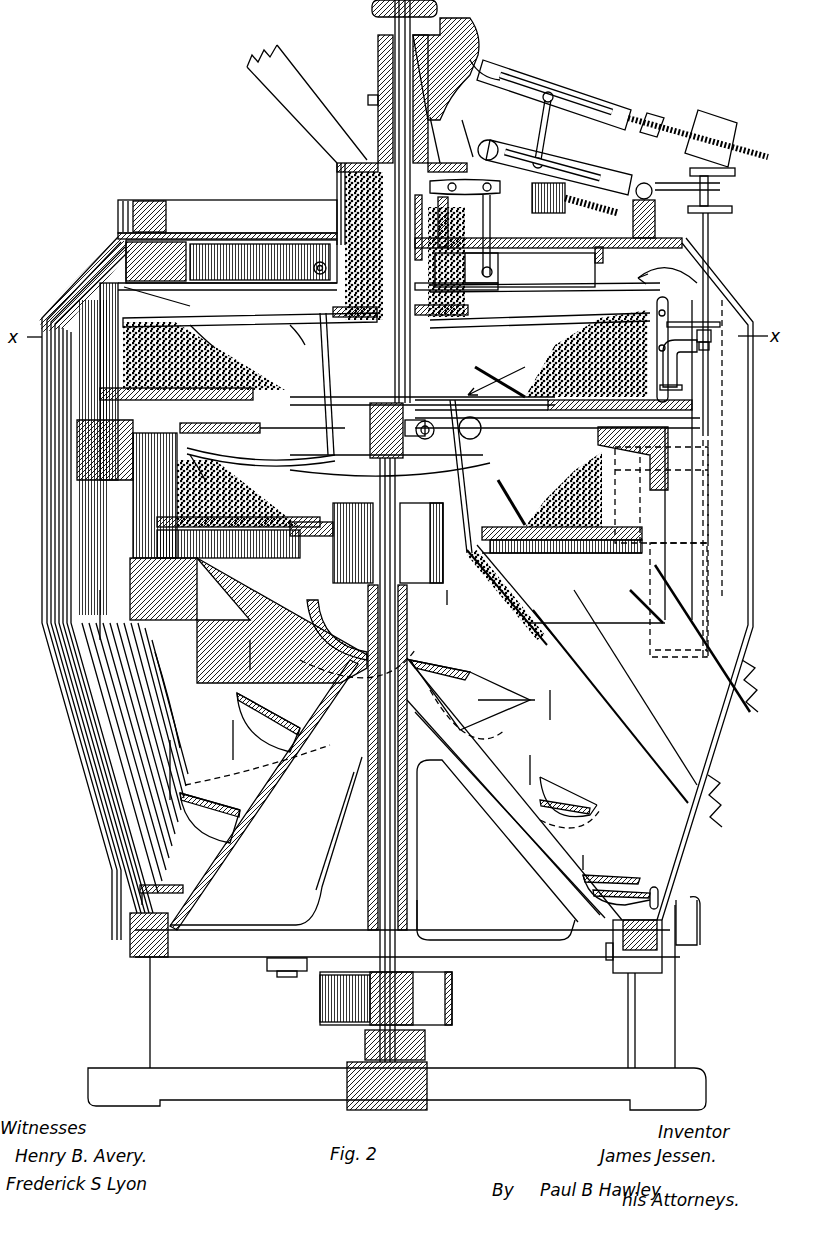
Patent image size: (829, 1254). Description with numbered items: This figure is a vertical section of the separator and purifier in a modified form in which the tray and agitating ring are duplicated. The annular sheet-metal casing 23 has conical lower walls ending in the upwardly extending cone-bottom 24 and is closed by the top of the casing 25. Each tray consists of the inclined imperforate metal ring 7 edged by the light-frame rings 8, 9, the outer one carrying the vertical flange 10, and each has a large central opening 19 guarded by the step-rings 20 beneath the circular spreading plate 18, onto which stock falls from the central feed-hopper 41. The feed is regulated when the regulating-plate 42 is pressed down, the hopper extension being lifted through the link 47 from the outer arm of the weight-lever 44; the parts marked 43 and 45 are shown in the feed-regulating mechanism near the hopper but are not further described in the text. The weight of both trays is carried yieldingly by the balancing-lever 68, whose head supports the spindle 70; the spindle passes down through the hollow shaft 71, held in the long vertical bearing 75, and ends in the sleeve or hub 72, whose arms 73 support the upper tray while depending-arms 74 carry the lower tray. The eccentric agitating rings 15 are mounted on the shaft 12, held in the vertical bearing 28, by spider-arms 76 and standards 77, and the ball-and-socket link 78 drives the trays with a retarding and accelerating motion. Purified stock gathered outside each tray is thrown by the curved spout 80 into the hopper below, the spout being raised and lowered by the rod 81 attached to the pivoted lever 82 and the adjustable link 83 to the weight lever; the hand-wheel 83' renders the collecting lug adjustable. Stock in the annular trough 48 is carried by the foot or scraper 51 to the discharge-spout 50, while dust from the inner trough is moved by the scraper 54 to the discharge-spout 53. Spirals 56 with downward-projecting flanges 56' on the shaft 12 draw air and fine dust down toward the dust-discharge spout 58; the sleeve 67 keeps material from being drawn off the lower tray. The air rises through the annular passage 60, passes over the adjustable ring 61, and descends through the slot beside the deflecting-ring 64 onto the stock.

The inclined imperforate metal ring 7 is at (555, 556).
The light-frame ring 8 is at (388, 502).
The light-frame ring 9 is at (562, 559).
The vertical flange 10 is at (680, 460).
The shaft 12 is at (422, 850).
The agitating ring 15 is at (120, 302).
The circular plate 18 is at (492, 288).
The central opening 19 is at (522, 385).
The step-rings 20 is at (470, 394).
The casing 23 is at (752, 563).
The cone-bottom 24 is at (270, 782).
The top of the casing 25 is at (218, 240).
The vertical bearing 28 is at (422, 813).
The feed-hopper 41 is at (337, 178).
The regulating-plate 42 is at (427, 241).
The gate 43 is at (435, 222).
The weight-lever 44 is at (465, 177).
The threaded rod 45 is at (574, 208).
The link 47 is at (491, 222).
The annular trough 48 is at (668, 492).
The discharge-spout 50 is at (744, 643).
The foot or scraper 51 is at (700, 432).
The discharge-spout 53 is at (650, 733).
The foot or scraper 54 is at (512, 595).
The spirals 56 is at (379, 749).
The downward-projecting flanges 56' is at (415, 779).
The dust-discharge spout 58 is at (686, 913).
The annular passage 60 is at (731, 450).
The adjustable ring 61 is at (720, 340).
The deflecting-ring 64 is at (597, 262).
The adjustable collar or sleeve 67 is at (366, 543).
The balancing-lever 68 is at (583, 105).
The spindle 70 is at (386, 25).
The hollow shaft 71 is at (378, 60).
The sleeve or hub 72 is at (445, 385).
The arms 73 is at (496, 373).
The depending-arms 74 is at (466, 500).
The vertical bearing 75 is at (430, 118).
The spider-arms 76 is at (228, 328).
The standards 77 is at (330, 358).
The ball-and-socket link 78 is at (443, 436).
The spout or trough 80 is at (683, 338).
The vertically-movable rod 81 is at (709, 254).
The pivoted lever 82 is at (620, 185).
The adjustable link 83 is at (528, 130).
The hand-wheel 83' is at (722, 194).